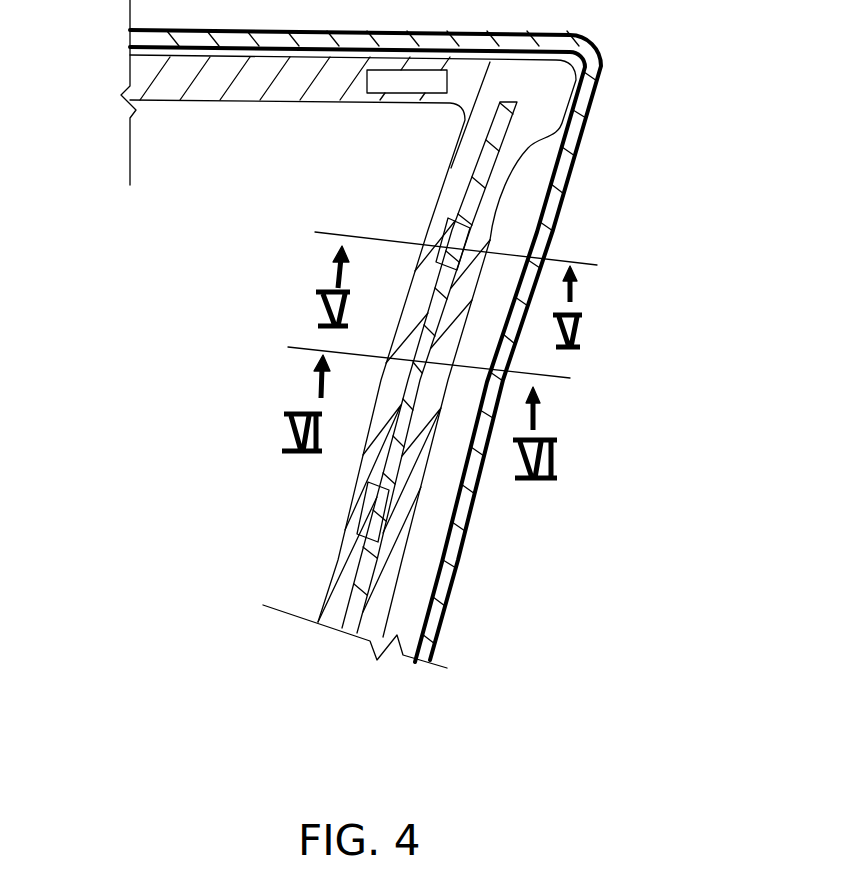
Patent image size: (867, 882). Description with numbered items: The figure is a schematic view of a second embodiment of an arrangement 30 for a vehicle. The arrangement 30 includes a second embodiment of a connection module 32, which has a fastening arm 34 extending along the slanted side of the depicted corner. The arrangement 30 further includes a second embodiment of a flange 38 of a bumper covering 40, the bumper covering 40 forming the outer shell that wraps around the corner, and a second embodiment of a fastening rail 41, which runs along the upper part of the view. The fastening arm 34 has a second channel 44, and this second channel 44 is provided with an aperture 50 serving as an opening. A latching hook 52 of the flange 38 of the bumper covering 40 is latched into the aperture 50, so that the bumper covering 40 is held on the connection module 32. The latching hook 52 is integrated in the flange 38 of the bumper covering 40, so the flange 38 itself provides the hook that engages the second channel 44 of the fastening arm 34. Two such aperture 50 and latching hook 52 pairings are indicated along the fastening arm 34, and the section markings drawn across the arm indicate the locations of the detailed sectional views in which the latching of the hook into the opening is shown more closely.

The arrangement 30 is at (411, 352).
The connection module 32 is at (233, 294).
The fastening arm 34 is at (326, 633).
The flange 38 is at (488, 160).
The bumper covering 40 is at (583, 132).
The fastening rail 41 is at (215, 93).
The second channel 44 is at (391, 378).
The aperture 50 is at (437, 263).
The latching hook 52 is at (452, 236).